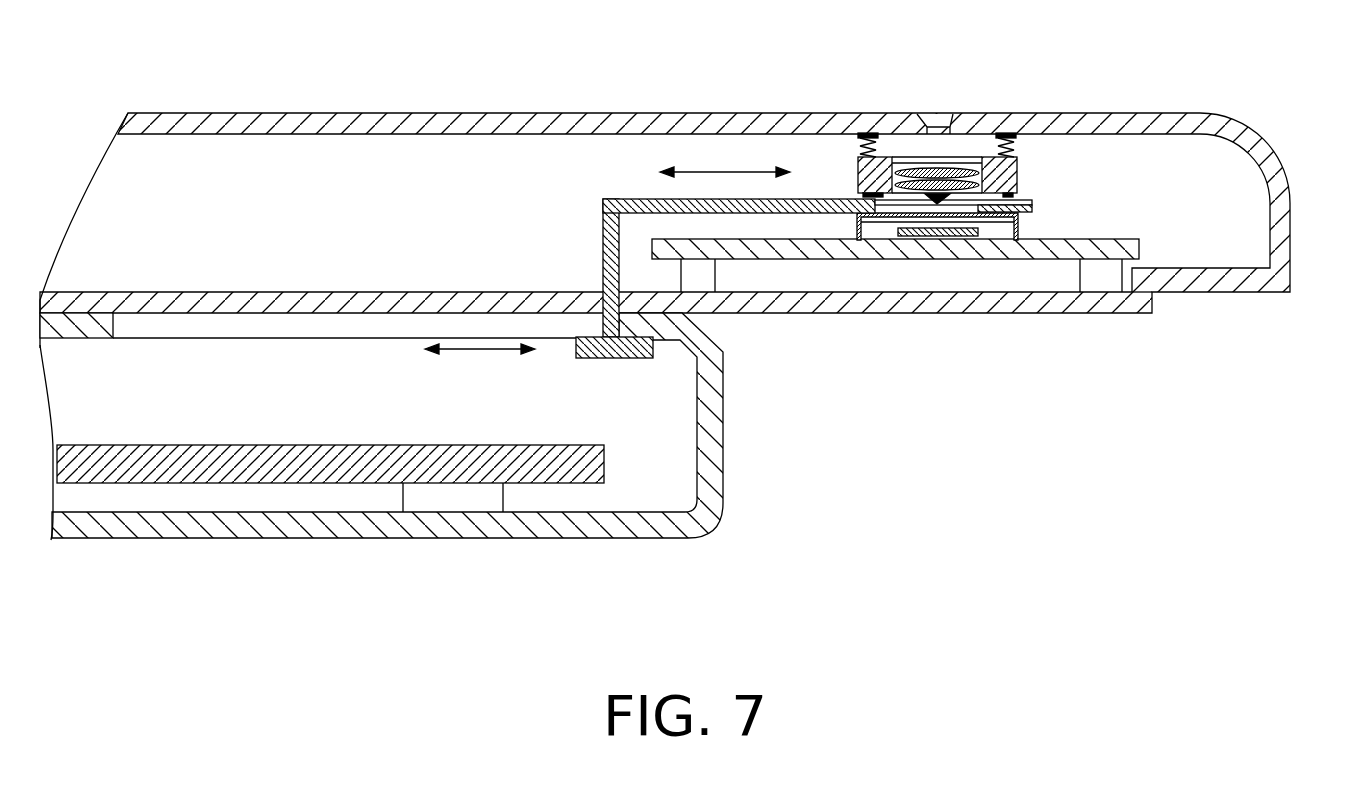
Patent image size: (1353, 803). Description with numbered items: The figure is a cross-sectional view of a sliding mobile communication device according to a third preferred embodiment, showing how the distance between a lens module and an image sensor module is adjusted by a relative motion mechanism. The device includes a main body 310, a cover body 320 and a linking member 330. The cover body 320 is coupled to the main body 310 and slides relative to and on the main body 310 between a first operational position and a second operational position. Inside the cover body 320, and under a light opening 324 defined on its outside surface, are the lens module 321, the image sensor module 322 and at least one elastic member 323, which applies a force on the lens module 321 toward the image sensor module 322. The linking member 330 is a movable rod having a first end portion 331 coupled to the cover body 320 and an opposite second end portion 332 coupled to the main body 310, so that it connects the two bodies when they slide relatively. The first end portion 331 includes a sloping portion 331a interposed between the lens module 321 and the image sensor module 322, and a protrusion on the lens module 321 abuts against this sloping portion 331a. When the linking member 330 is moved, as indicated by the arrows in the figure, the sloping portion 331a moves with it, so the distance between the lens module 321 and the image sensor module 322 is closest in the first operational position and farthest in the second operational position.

The main body 310 is at (652, 483).
The cover body 320 is at (1238, 138).
The lens module 321 is at (950, 170).
The image sensor module 322 is at (1006, 228).
The elastic member 323 is at (860, 150).
The light opening 324 is at (930, 118).
The linking member 330 is at (607, 250).
The first end portion 331 is at (860, 200).
The sloping portion 331a is at (886, 198).
The second end portion 332 is at (648, 357).